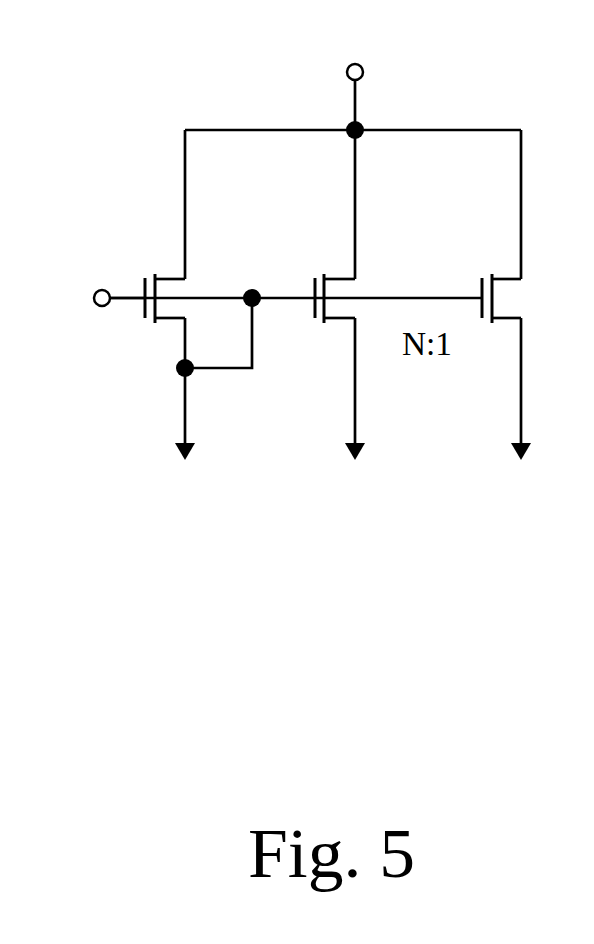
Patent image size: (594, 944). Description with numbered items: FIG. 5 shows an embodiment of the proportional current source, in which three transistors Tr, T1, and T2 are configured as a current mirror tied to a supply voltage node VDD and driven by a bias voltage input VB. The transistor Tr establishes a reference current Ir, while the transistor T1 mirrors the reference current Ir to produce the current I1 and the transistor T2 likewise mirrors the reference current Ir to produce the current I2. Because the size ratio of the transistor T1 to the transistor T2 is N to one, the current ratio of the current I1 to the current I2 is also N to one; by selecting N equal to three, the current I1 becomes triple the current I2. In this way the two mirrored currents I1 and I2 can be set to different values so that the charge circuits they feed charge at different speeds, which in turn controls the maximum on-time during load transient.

The supply voltage node VDD is at (355, 80).
The bias voltage input VB is at (85, 296).
The transistor Tr is at (189, 273).
The transistor T1 is at (360, 226).
The transistor T2 is at (528, 273).
The reference current Ir is at (185, 412).
The current I1 is at (355, 412).
The current I2 is at (522, 411).